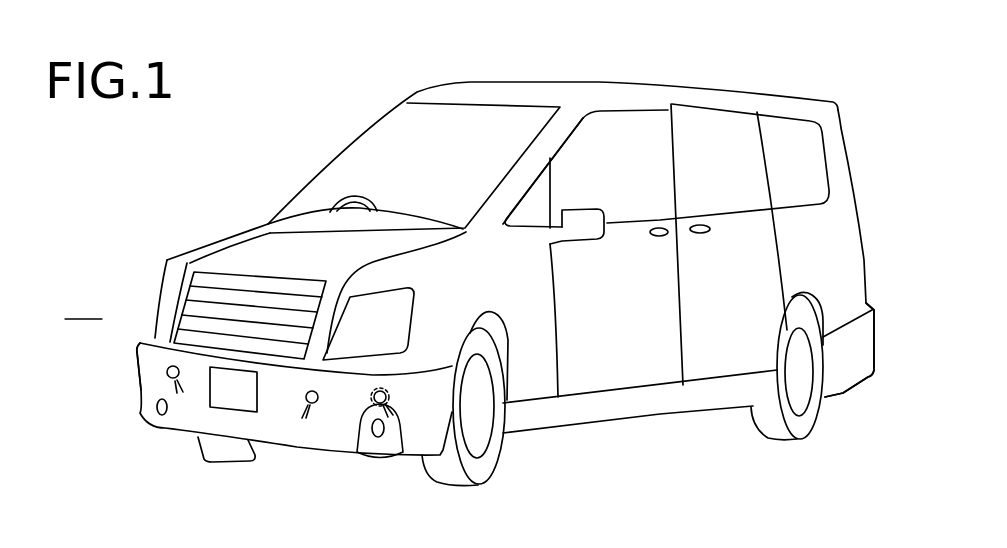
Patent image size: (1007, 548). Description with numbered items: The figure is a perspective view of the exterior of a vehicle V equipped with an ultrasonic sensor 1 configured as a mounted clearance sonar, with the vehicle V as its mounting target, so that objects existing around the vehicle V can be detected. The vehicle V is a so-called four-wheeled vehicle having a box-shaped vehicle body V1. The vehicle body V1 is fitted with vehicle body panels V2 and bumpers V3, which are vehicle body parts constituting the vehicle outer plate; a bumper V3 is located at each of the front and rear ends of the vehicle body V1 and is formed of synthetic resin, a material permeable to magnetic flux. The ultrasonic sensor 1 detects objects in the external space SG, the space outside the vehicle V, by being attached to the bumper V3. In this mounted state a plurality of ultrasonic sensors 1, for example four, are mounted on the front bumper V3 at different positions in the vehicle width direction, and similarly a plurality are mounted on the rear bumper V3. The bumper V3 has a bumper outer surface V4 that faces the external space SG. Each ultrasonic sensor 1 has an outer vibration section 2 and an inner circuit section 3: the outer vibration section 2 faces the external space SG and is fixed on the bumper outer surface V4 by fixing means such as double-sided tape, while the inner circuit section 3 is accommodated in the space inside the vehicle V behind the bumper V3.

The vehicle V is at (856, 90).
The vehicle body V1 is at (268, 224).
The vehicle body panels V2 is at (838, 254).
The bumper V3 is at (862, 334).
The bumper outer surface V4 is at (150, 364).
The external space SG is at (83, 307).
The ultrasonic sensor 1 is at (178, 383).
The outer vibration section 2 is at (359, 456).
The inner circuit section 3 is at (390, 401).